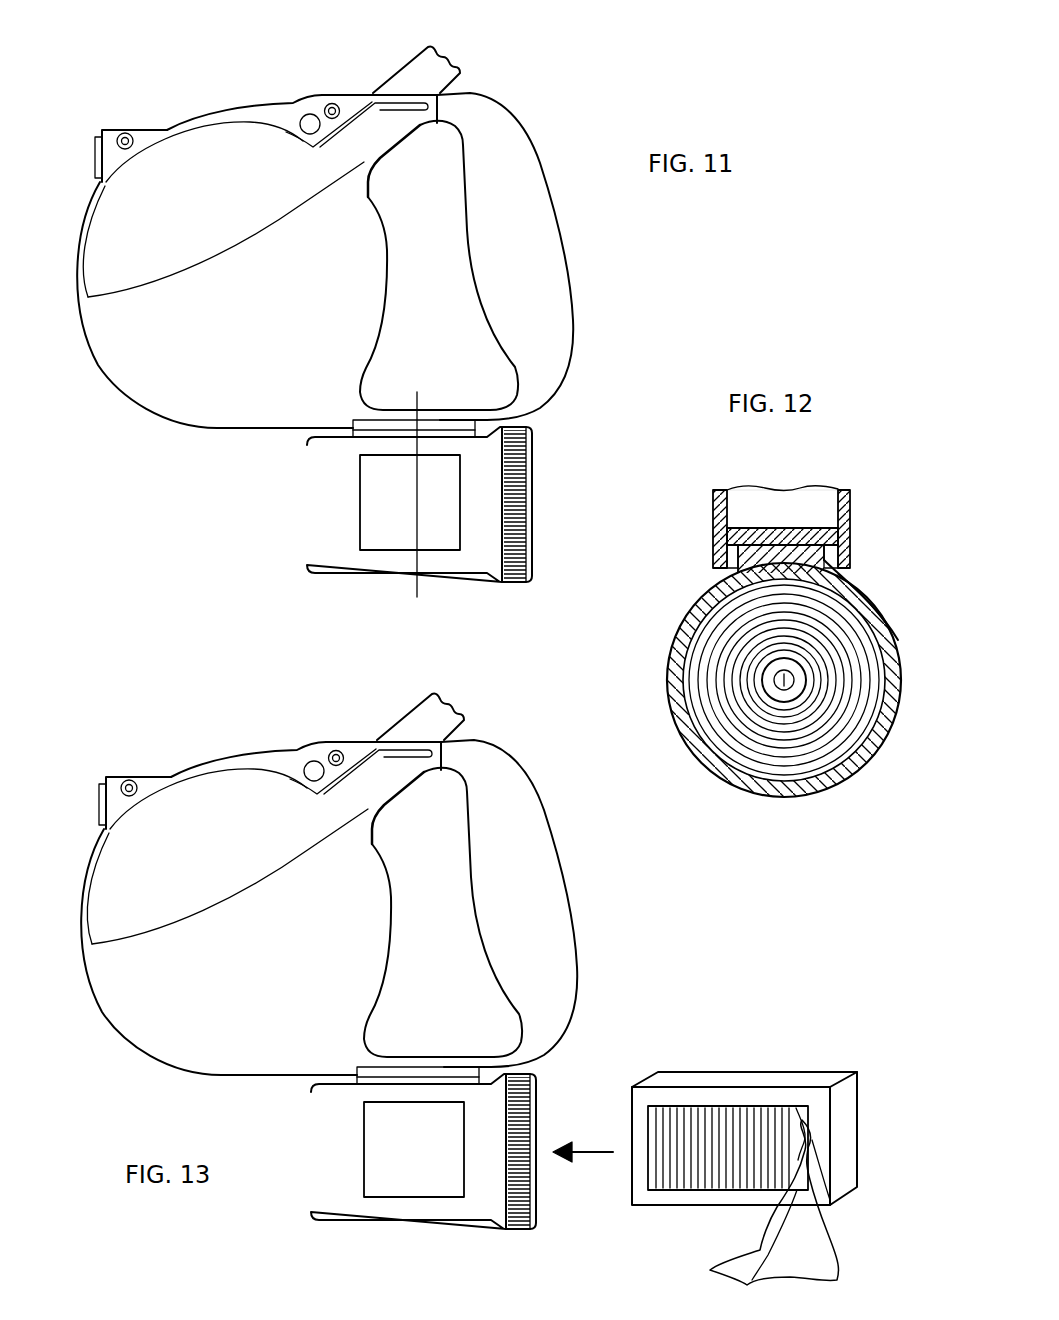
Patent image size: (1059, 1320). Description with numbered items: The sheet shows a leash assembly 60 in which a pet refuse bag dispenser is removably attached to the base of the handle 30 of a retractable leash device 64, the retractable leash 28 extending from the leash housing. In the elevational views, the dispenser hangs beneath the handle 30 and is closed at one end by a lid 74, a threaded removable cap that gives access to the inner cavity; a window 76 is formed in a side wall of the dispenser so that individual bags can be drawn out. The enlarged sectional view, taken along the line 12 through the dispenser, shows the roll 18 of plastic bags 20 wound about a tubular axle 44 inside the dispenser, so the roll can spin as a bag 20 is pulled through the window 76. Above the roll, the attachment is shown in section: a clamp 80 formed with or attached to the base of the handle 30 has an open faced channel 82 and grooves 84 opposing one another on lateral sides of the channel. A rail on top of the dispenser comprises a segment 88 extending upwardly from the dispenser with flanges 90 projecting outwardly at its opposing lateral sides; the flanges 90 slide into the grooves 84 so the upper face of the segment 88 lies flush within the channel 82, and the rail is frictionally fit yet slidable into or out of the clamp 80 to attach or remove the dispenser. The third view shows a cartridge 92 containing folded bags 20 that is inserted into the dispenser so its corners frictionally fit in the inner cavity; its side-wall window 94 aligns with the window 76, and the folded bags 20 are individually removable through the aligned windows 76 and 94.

In FIG. 11, the pet refuse bag dispenser 12 is at (428, 388).
In FIG. 12, the roll 18 is at (800, 725).
In FIG. 13, the plastic bags 20 is at (824, 1249).
In FIG. 11, the retractable leash 28 is at (95, 160).
In FIG. 11, the handle 30 is at (548, 262).
In FIG. 13, the handle 30 is at (487, 903).
In FIG. 12, the tubular axle 44 is at (783, 690).
In FIG. 11, the leash assembly 60 is at (222, 100).
In FIG. 13, the leash assembly 60 is at (300, 721).
In FIG. 11, the retractable leash device 64 is at (120, 388).
In FIG. 12, the retractable leash device 64 is at (889, 730).
In FIG. 13, the retractable leash device 64 is at (289, 985).
In FIG. 11, the lid 74 is at (520, 486).
In FIG. 13, the lid 74 is at (543, 1164).
In FIG. 11, the window 76 is at (380, 540).
In FIG. 12, the window 76 is at (676, 656).
In FIG. 13, the window 76 is at (411, 1178).
In FIG. 12, the clamp 80 is at (856, 521).
In FIG. 12, the open faced channel 82 is at (775, 530).
In FIG. 12, the grooves 84 is at (724, 538).
In FIG. 12, the segment 88 is at (882, 614).
In FIG. 12, the flanges 90 is at (726, 570).
In FIG. 13, the cartridge 92 is at (786, 1076).
In FIG. 13, the side-wall window 94 is at (802, 1116).